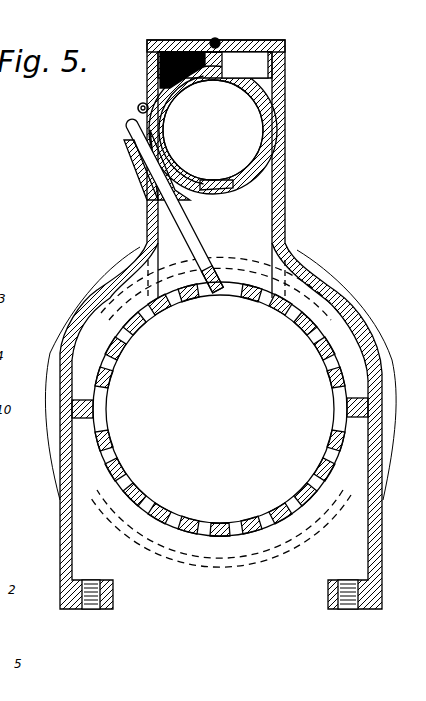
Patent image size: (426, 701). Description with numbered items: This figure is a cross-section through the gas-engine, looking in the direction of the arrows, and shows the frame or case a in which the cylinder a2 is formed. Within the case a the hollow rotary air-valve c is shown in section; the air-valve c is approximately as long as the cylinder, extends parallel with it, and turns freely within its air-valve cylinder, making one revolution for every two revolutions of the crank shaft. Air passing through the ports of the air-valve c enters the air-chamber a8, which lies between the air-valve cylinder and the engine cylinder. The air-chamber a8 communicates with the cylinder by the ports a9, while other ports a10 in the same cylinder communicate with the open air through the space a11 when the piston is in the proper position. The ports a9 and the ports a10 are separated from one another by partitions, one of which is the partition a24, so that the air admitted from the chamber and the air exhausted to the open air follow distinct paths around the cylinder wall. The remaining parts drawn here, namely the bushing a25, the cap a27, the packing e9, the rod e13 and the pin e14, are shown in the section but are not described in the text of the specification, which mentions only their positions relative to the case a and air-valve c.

The frame or case a is at (285, 138).
The cylinder a2 is at (388, 383).
The air-chamber a8 is at (220, 409).
The ports a9 is at (317, 345).
The ports a10 is at (140, 492).
The space a11 is at (170, 562).
The partition a24 is at (70, 412).
The bushing a25 is at (196, 86).
The cap a27 is at (284, 43).
The air-valve c is at (213, 126).
The packing e9 is at (160, 62).
The rod e13 is at (128, 129).
The pin e14 is at (137, 109).